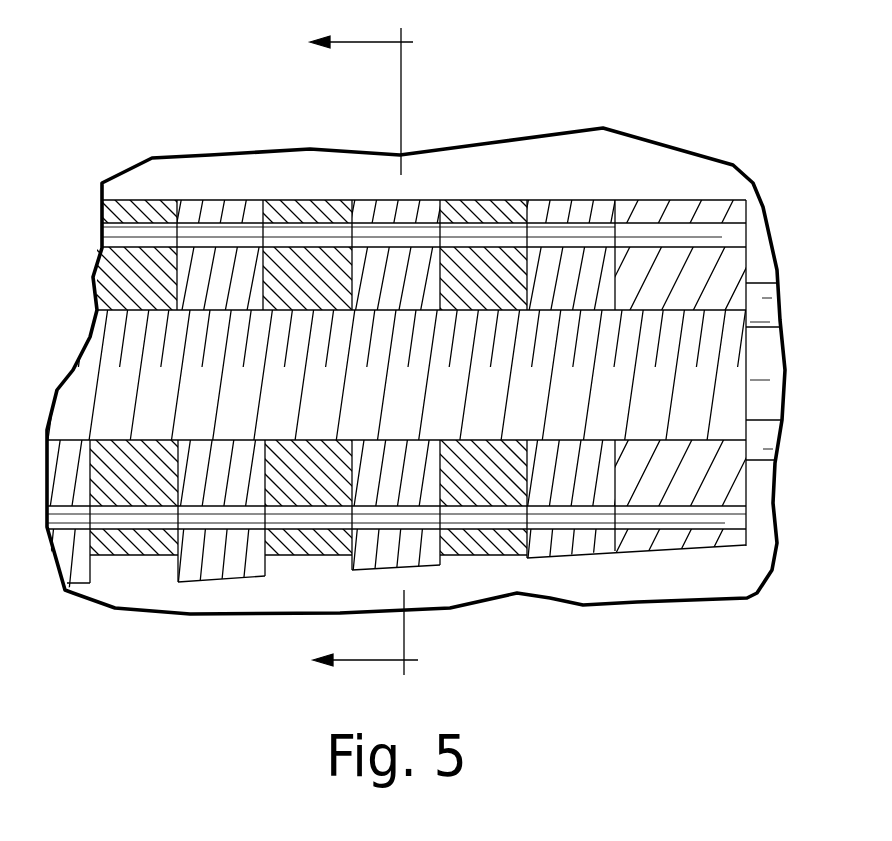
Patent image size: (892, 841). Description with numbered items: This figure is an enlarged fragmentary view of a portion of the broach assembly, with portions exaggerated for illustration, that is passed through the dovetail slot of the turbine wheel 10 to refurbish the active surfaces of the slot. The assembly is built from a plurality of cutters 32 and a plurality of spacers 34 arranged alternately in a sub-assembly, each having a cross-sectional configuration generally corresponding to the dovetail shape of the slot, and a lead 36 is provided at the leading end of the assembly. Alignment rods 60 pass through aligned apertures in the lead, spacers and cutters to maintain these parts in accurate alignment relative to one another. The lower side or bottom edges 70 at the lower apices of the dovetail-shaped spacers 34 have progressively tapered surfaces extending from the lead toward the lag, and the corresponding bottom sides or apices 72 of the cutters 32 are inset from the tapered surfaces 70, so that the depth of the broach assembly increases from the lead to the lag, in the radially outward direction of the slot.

The turbine wheel 10 is at (342, 353).
The cutters 32 is at (298, 200).
The spacers 34 is at (573, 198).
The lead 36 is at (690, 198).
The alignment rods 60 is at (222, 235).
The bottom edges of the spacers 70 is at (553, 558).
The bottom sides of the cutters 72 is at (297, 556).